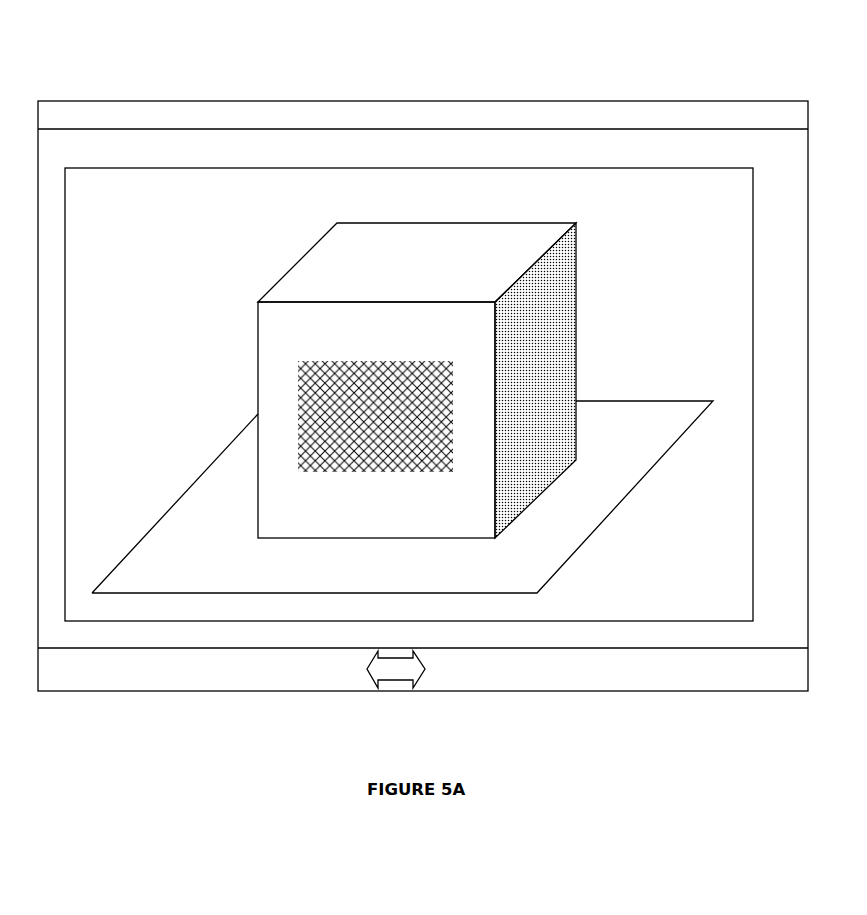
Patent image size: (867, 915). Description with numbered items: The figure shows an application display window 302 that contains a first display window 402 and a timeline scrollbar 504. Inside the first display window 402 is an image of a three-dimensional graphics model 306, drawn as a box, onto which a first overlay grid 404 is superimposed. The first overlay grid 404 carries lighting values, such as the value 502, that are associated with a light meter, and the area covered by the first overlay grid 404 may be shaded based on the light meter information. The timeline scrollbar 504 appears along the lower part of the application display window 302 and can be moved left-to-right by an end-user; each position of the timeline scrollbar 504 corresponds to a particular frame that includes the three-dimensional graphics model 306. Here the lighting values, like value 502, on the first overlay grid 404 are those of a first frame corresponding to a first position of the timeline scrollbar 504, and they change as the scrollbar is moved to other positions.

The application display window 302 is at (218, 101).
The first display window 402 is at (450, 168).
The 3-D graphics model 306 is at (287, 278).
The first overlay grid 404 is at (325, 362).
The value 502 is at (362, 425).
The timeline scrollbar 504 is at (397, 681).